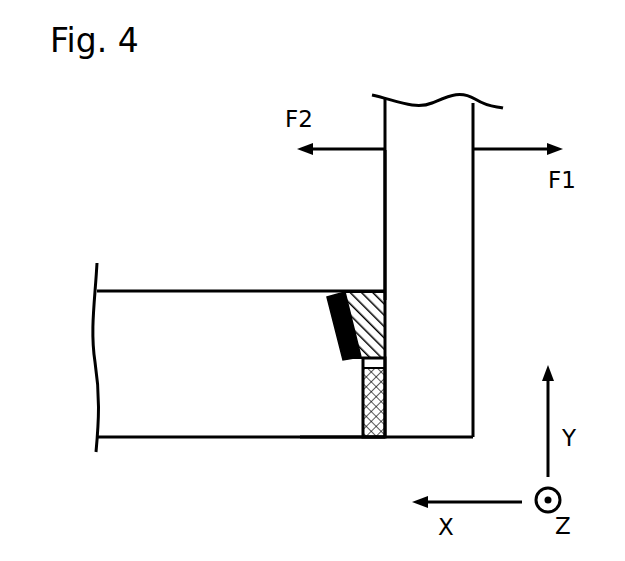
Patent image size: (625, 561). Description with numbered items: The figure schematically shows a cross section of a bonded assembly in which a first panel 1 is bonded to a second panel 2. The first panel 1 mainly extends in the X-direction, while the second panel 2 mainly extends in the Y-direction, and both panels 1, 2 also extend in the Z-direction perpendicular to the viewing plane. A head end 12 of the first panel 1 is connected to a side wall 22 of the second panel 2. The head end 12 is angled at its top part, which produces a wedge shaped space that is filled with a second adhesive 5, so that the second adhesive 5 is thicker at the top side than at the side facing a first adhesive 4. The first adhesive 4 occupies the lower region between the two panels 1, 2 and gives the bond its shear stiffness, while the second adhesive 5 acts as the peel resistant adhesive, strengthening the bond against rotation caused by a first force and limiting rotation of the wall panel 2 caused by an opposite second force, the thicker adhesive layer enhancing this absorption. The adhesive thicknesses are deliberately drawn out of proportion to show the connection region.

The first panel 1 is at (160, 315).
The second panel 2 is at (465, 368).
The first adhesive 4 is at (370, 410).
The second adhesive 5 is at (331, 297).
The head end 12 is at (362, 428).
The side wall 22 is at (385, 218).